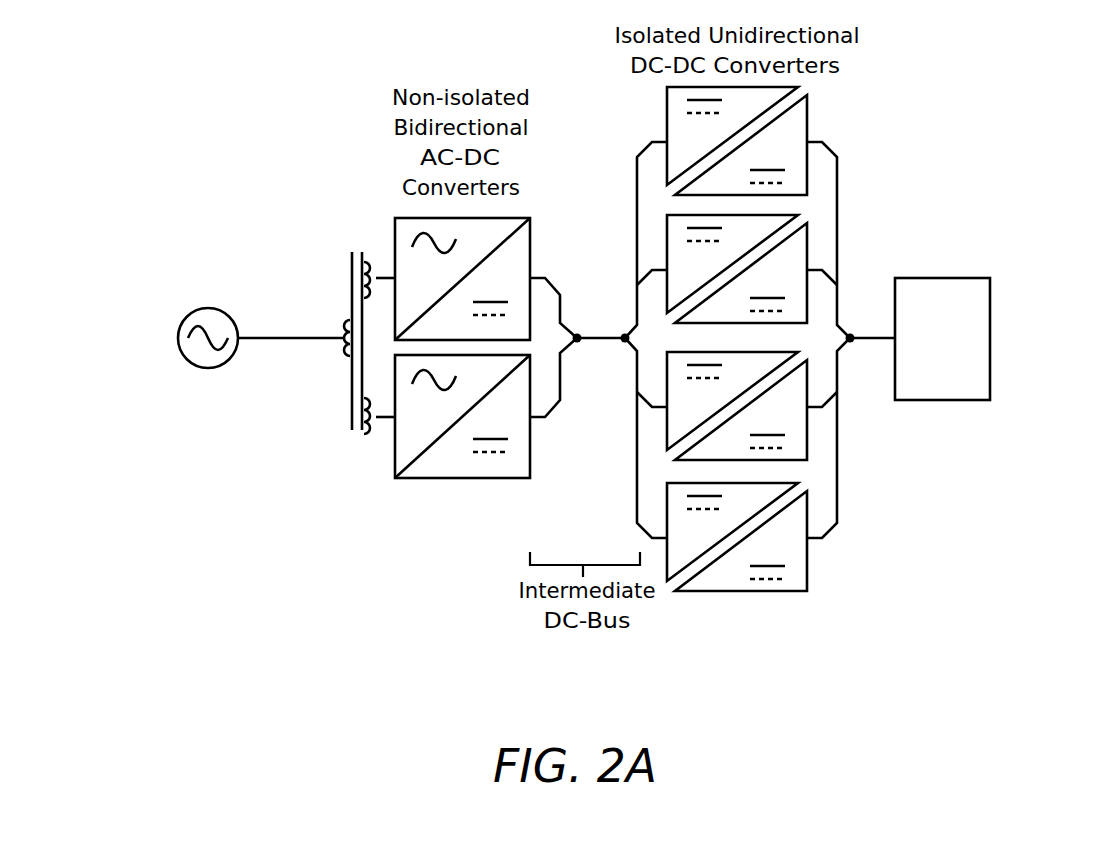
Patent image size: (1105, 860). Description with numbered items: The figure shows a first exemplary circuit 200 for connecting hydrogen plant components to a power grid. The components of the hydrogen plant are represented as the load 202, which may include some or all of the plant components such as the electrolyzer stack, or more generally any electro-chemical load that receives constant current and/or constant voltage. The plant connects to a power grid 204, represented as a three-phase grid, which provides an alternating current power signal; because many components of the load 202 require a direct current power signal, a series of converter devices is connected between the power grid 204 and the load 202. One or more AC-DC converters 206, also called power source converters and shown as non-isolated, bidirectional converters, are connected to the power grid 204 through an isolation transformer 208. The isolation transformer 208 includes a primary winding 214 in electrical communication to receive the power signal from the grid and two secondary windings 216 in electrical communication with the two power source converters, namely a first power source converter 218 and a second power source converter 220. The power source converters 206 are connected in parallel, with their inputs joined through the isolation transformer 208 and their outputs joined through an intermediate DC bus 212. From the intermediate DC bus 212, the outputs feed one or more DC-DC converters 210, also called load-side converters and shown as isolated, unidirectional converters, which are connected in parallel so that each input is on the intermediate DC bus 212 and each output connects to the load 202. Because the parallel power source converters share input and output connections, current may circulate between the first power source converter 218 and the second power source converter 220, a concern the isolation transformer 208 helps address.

The circuit 200 is at (182, 96).
The load 202 is at (965, 400).
The power grid 204 is at (189, 361).
The AC-DC converters 206 is at (484, 369).
The isolation transformer 208 is at (301, 306).
The DC-DC converters 210 is at (735, 631).
The intermediate DC bus 212 is at (569, 660).
The primary winding 214 is at (332, 302).
The secondary windings 216 is at (365, 238).
The first power source converter 218 is at (537, 218).
The second power source converter 220 is at (543, 461).